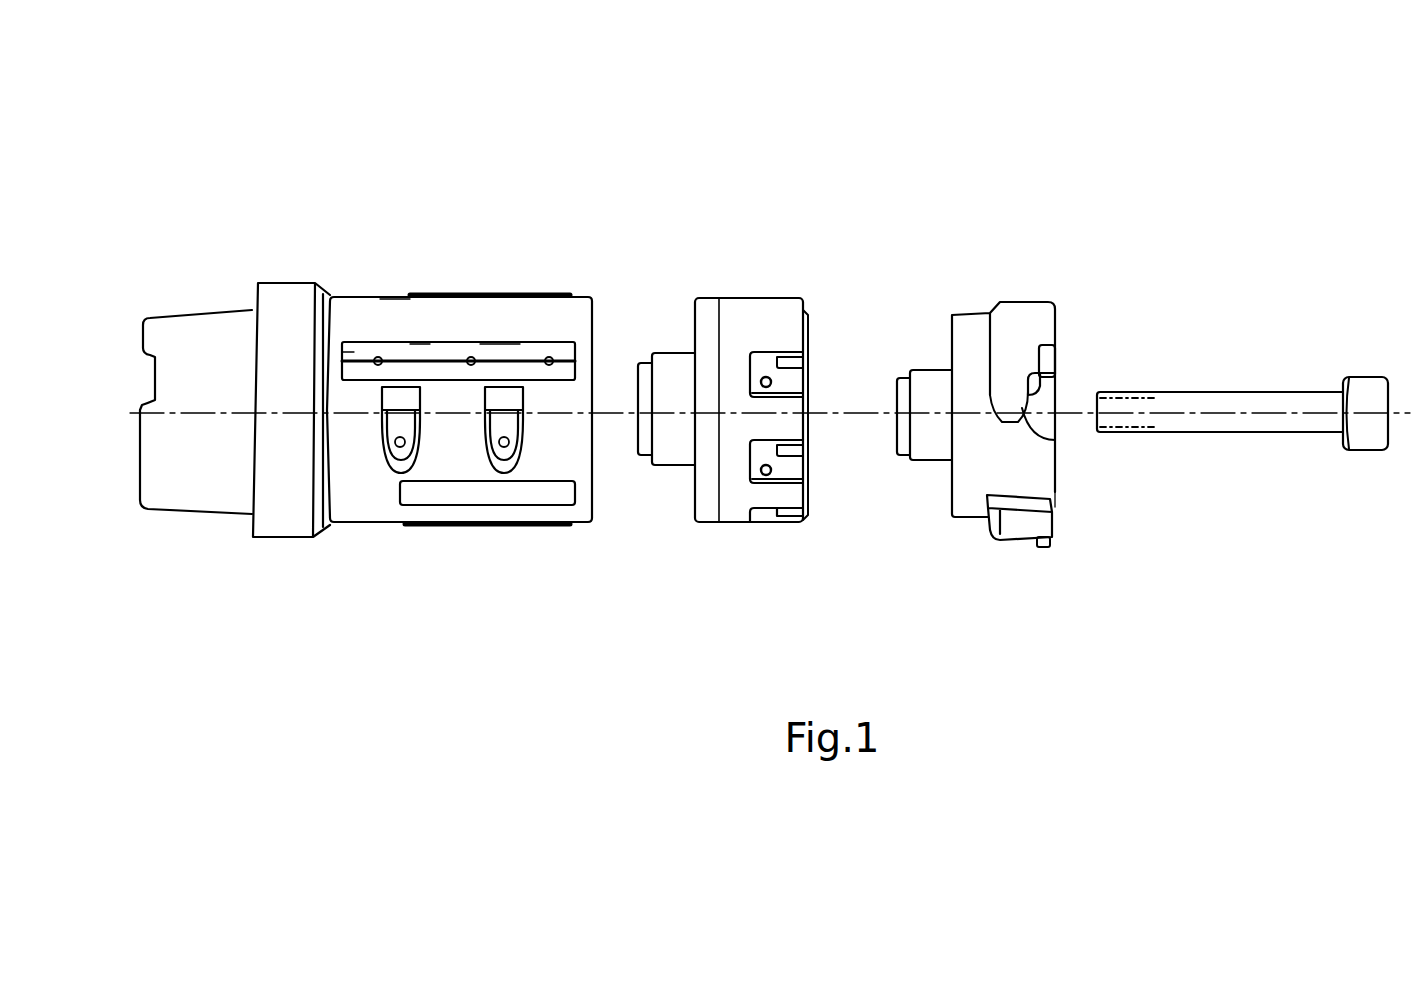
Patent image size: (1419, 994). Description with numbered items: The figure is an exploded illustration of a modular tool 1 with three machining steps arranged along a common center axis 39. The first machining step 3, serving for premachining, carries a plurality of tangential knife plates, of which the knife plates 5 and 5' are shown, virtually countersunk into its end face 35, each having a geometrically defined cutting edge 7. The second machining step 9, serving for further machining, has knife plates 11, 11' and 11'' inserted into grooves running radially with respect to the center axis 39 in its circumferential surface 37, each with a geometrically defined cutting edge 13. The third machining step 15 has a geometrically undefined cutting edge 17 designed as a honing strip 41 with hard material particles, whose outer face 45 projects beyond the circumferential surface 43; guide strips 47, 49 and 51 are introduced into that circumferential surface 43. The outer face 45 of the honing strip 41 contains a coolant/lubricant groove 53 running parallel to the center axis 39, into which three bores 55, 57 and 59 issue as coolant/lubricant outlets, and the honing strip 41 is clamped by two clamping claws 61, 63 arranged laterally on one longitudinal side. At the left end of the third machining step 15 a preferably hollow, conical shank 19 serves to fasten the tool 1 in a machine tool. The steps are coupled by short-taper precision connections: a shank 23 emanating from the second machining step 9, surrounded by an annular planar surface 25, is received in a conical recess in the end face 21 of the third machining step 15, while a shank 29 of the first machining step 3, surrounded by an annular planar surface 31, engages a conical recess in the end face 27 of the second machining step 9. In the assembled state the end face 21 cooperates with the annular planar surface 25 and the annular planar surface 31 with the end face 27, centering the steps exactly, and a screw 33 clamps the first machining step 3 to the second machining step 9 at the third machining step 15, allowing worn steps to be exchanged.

The tool 1 is at (643, 210).
The first machining step 3 is at (964, 300).
The knife plate 5 is at (1082, 309).
The knife plate 5' is at (1019, 574).
The geometrically defined cutting edge 7 is at (1058, 377).
The second machining step 9 is at (750, 290).
The knife plate 11 is at (823, 332).
The knife plate 11' is at (814, 451).
The knife plate 11'' is at (802, 556).
The geometrically defined cutting edge 13 is at (800, 382).
The third machining step 15 is at (393, 285).
The geometrically undefined cutting edge 17 is at (499, 326).
The shank 19 is at (192, 340).
The end face 21 is at (600, 501).
The shank 23 is at (672, 452).
The annular planar surface 25 is at (690, 512).
The end face 27 is at (820, 331).
The shank 29 is at (930, 455).
The annular planar surface 31 is at (950, 497).
The screw 33 is at (1262, 454).
The end face 35 is at (1064, 489).
The circumferential surface 37 is at (738, 525).
The center axis 39 is at (1405, 405).
The honing strip 41 is at (420, 350).
The circumferential surface 43 is at (363, 532).
The outer face 45 is at (545, 357).
The guide strip 47 is at (427, 536).
The guide strip 49 is at (466, 492).
The guide strip 51 is at (534, 352).
The coolant/lubricant groove 53 is at (352, 360).
The bore 55 is at (375, 358).
The bore 57 is at (471, 357).
The bore 59 is at (552, 360).
The clamping claw 61 is at (402, 425).
The clamping claw 63 is at (516, 428).